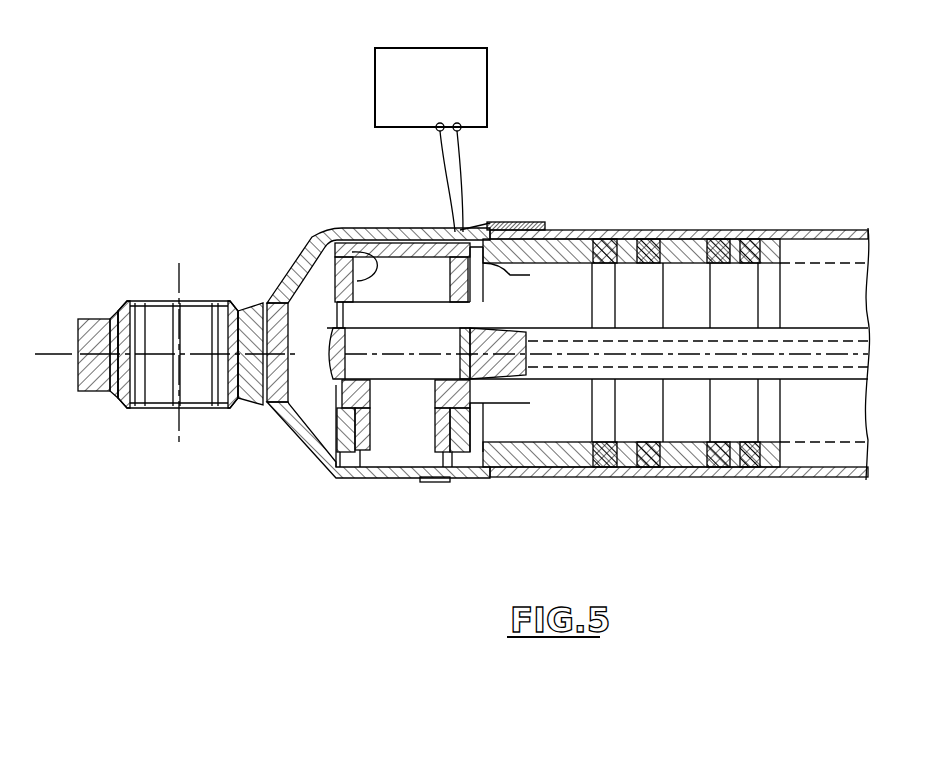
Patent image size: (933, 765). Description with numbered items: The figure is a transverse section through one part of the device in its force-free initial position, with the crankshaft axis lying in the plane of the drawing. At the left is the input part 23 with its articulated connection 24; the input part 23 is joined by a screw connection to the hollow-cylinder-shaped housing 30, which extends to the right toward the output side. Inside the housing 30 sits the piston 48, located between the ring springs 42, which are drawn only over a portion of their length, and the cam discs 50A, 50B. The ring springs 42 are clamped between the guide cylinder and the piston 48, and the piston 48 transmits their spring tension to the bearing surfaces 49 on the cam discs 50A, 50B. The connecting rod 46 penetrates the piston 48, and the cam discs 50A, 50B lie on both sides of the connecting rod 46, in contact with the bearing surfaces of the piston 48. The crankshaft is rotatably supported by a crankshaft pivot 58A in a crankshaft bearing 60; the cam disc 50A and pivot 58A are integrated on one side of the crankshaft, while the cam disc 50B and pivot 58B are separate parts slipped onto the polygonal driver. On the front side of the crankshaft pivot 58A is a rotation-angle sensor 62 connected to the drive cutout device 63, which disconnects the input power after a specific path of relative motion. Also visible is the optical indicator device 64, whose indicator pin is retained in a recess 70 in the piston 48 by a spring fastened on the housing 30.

The input part 23 is at (278, 413).
The articulated connection 24 is at (148, 405).
The housing 30 is at (807, 228).
The ring springs 42 is at (760, 230).
The connecting rod 46 is at (823, 347).
The piston 48 is at (583, 240).
The bearing surfaces 49 is at (490, 268).
The cam disc 50A is at (348, 315).
The cam disc 50B is at (483, 477).
The crankshaft pivot 58A is at (430, 267).
The crankshaft pivot 58B is at (452, 478).
The crankshaft bearing 60 is at (333, 235).
The rotation-angle sensor 62 is at (336, 252).
The drive cutout device 63 is at (367, 90).
The optical indicator device 64 is at (512, 214).
The recess 70 is at (565, 230).